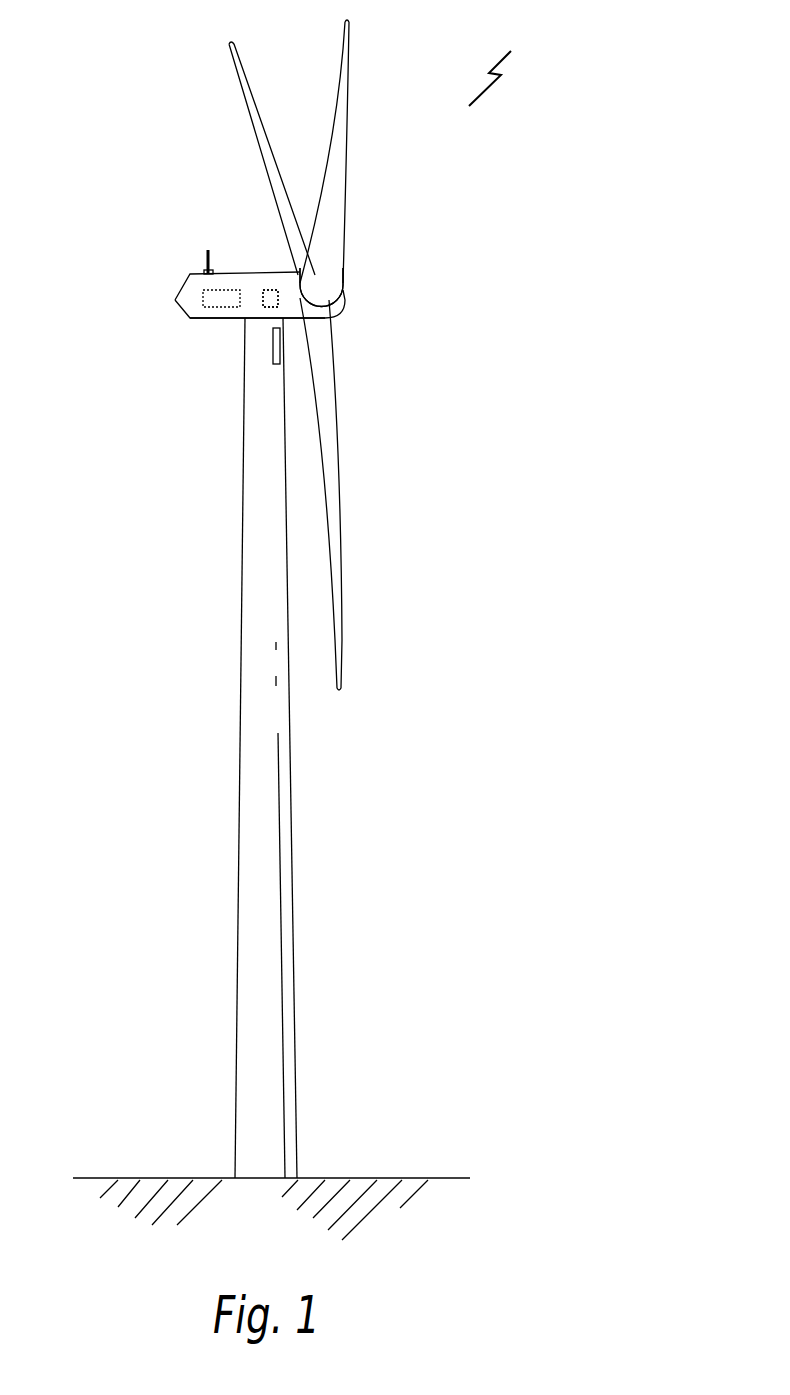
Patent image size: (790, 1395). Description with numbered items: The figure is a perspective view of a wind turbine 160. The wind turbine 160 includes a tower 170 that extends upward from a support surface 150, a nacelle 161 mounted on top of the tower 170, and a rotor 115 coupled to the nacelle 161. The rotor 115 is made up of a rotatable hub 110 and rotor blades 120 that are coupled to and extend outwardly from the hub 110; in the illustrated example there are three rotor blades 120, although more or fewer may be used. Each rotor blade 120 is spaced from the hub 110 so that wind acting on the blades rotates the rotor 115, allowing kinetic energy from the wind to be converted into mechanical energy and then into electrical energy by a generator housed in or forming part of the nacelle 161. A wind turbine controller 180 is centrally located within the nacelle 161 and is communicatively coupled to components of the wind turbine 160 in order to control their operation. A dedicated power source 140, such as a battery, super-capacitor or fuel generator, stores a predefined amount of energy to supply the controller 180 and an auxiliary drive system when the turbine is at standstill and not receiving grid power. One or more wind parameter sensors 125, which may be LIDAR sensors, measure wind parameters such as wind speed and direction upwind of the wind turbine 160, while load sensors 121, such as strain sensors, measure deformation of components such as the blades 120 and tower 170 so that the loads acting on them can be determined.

The hub 110 is at (340, 305).
The rotor 115 is at (350, 268).
The rotor blade 120 is at (340, 68).
The load sensor 121 is at (273, 363).
The wind parameter sensor 125 is at (211, 242).
The dedicated power source 140 is at (218, 300).
The support surface 150 is at (160, 1178).
The wind turbine 160 is at (528, 68).
The nacelle 161 is at (222, 320).
The tower 170 is at (256, 866).
The wind turbine controller 180 is at (270, 303).